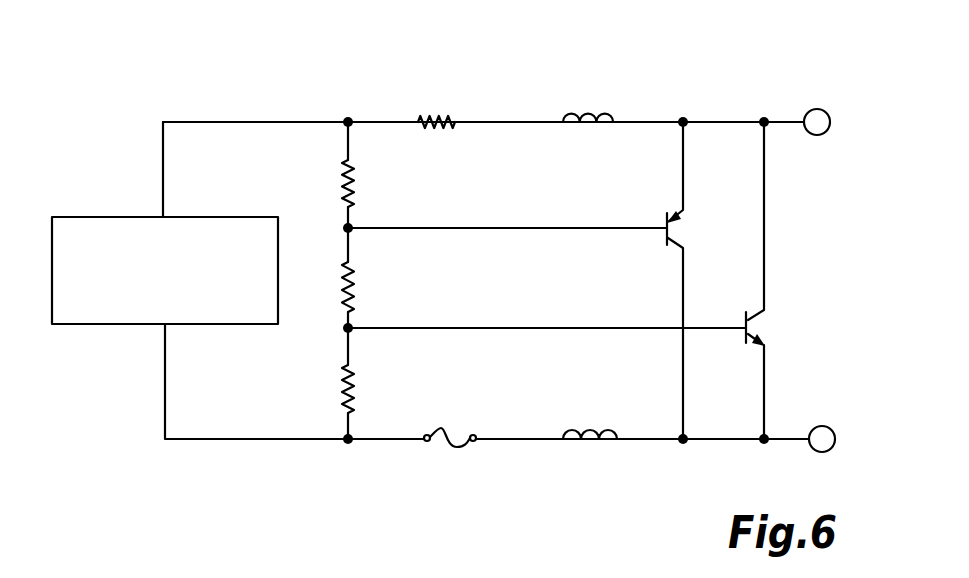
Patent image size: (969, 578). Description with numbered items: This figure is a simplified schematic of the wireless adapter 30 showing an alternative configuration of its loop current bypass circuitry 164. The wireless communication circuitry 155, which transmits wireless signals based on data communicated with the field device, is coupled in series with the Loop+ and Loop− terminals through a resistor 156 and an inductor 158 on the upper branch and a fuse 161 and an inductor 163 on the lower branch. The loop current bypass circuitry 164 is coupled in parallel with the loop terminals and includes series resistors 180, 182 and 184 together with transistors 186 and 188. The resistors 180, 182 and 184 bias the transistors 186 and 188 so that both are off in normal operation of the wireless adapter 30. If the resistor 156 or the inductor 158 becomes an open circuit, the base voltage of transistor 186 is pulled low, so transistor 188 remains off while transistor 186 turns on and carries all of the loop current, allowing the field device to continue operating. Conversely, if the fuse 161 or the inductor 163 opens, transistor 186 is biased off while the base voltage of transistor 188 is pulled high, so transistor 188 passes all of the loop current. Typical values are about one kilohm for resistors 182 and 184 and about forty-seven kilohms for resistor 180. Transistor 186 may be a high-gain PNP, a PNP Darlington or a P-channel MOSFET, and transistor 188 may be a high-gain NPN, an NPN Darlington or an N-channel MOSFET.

The wireless adapter 30 is at (766, 73).
The wireless communication circuitry 155 is at (203, 324).
The resistor 156 is at (437, 117).
The inductor 158 is at (580, 114).
The fuse 161 is at (441, 428).
The inductor 163 is at (577, 432).
The loop current bypass circuitry 164 is at (795, 312).
The resistor 180 is at (352, 177).
The resistor 182 is at (352, 292).
The resistor 184 is at (352, 398).
The transistor 186 is at (667, 245).
The transistor 188 is at (763, 324).